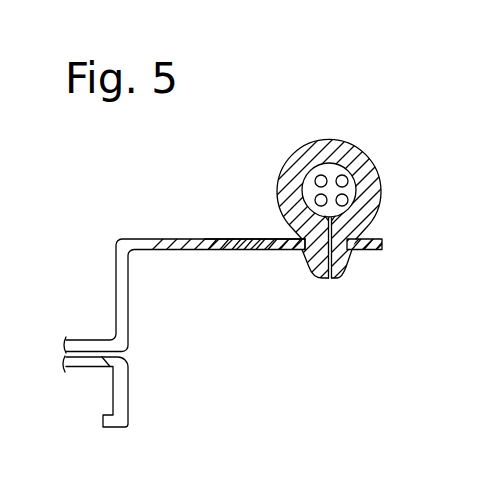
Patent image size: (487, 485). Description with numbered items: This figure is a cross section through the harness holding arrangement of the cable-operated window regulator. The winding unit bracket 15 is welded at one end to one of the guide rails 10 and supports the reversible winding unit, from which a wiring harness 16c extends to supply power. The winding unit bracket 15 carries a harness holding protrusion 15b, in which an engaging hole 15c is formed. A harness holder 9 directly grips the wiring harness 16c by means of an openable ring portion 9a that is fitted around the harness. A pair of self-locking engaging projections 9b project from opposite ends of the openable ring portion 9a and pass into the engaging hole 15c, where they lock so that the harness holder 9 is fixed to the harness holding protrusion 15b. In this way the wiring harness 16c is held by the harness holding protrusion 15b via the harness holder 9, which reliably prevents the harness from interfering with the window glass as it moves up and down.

The harness holder 9 is at (299, 224).
The openable ring portion 9a is at (363, 218).
The self-locking engaging projections 9b is at (310, 270).
The wiring harness 16c is at (349, 180).
The winding unit bracket 15 is at (250, 296).
The harness holding protrusion 15b is at (258, 251).
The engaging hole 15c is at (338, 270).
The guide rail 10 is at (126, 382).